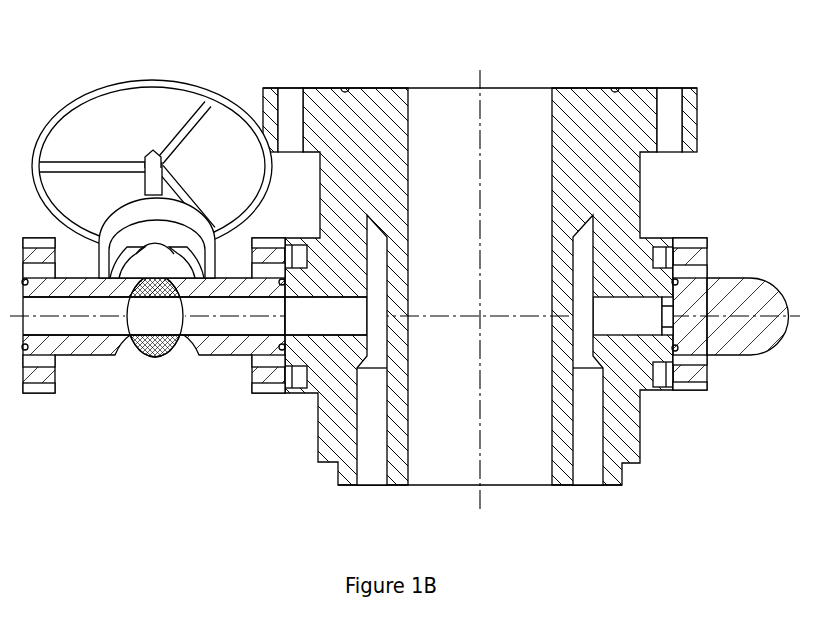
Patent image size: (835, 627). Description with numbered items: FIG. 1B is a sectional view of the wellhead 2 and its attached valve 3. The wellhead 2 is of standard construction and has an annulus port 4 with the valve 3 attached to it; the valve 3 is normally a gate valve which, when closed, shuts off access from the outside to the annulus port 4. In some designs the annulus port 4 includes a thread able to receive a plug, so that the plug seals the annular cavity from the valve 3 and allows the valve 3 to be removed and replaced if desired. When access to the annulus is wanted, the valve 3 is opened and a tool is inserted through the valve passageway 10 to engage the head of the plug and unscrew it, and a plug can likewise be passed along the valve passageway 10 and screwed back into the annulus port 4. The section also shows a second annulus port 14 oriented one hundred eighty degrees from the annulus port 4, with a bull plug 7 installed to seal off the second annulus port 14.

The wellhead 2 is at (375, 88).
The valve 3 is at (143, 373).
The annulus port 4 is at (335, 325).
The bull plug 7 is at (760, 288).
The valve passageway 10 is at (208, 325).
The second annulus port 14 is at (637, 325).